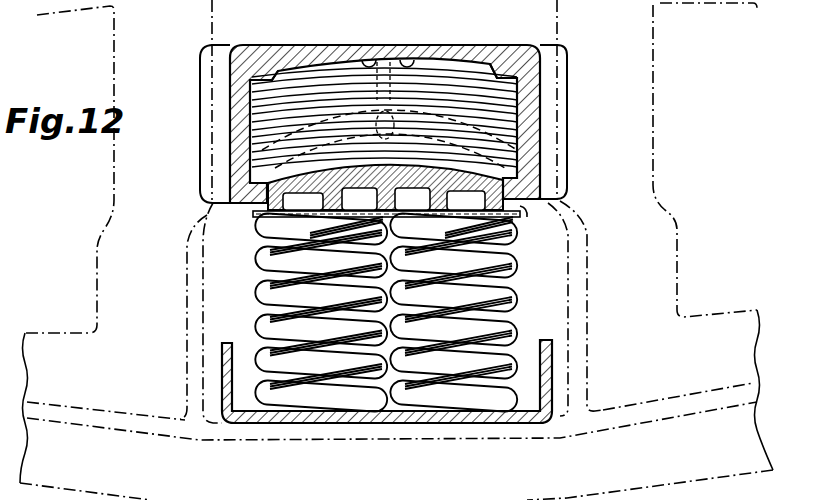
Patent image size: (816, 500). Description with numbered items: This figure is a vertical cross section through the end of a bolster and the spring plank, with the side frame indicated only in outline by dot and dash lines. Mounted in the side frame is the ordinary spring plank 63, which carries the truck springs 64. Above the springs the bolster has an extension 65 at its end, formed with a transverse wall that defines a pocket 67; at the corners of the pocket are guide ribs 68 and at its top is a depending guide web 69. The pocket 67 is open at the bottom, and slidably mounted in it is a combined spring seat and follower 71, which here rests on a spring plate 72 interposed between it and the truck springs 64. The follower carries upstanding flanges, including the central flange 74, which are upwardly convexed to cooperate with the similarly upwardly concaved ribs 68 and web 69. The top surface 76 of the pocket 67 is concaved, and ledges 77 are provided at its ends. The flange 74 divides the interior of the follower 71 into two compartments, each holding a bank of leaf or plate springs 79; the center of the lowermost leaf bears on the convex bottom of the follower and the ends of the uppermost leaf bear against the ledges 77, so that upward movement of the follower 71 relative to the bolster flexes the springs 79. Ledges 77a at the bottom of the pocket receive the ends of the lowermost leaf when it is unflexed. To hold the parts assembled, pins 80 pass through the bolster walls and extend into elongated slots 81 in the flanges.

The spring plank 63 is at (492, 424).
The truck springs 64 is at (263, 300).
The extension 65 is at (540, 46).
The pocket 67 is at (455, 66).
The guide ribs 68 is at (255, 108).
The depending guide web 69 is at (368, 60).
The combined spring seat and follower 71 is at (535, 219).
The spring plate 72 is at (253, 218).
The flange 74 is at (560, 146).
The top surface of the pocket 76 is at (407, 60).
The ledges 77 is at (273, 72).
The ledges 77a is at (593, 183).
The leaf or plate springs 79 is at (265, 134).
The pins 80 is at (359, 200).
The elongated slots 81 is at (412, 200).